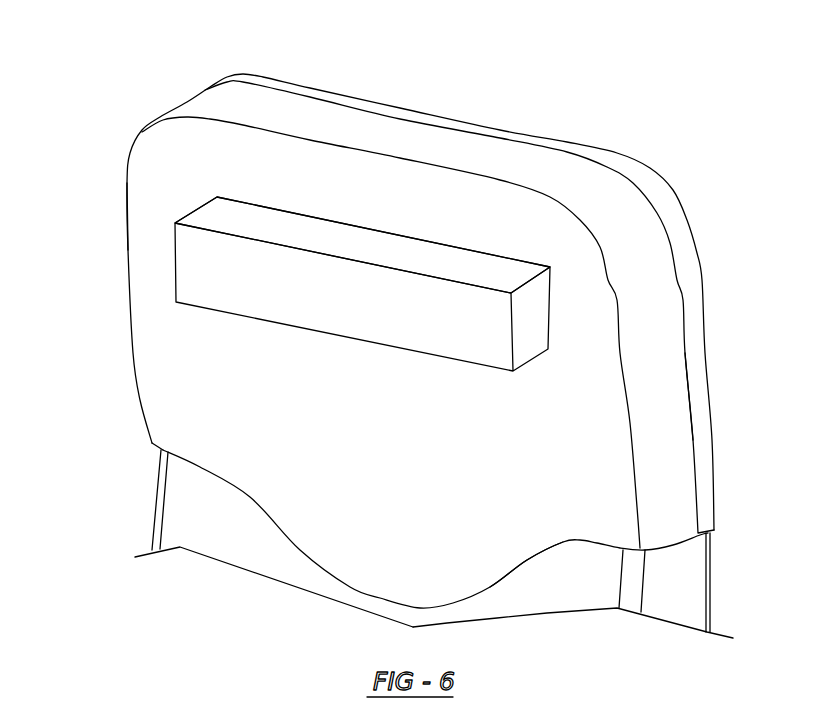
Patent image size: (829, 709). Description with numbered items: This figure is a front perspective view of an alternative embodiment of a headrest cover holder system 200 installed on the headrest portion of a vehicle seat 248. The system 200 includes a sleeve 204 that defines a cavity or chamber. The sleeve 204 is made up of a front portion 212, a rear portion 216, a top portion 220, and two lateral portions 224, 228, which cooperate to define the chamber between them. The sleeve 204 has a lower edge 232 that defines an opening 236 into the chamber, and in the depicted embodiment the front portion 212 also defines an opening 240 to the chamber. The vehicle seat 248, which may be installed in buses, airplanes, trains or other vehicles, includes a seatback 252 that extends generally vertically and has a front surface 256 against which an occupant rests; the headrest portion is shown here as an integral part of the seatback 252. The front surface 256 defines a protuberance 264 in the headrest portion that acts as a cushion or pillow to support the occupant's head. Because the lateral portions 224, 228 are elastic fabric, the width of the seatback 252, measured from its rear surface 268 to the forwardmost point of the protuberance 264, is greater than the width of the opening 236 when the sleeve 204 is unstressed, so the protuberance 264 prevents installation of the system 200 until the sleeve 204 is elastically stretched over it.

The headrest cover holder system 200 is at (143, 73).
The sleeve 204 is at (657, 343).
The front portion 212 is at (223, 377).
The rear portion 216 is at (680, 200).
The top portion 220 is at (392, 133).
The lateral portion 224 is at (677, 410).
The lateral portion 228 is at (128, 285).
The lower edge 232 is at (527, 560).
The opening 236 is at (596, 563).
The opening 240 is at (307, 217).
The vehicle seat 248 is at (150, 511).
The seatback 252 is at (213, 533).
The front surface 256 is at (277, 550).
The protuberance 264 is at (207, 268).
The rear surface 268 is at (712, 580).